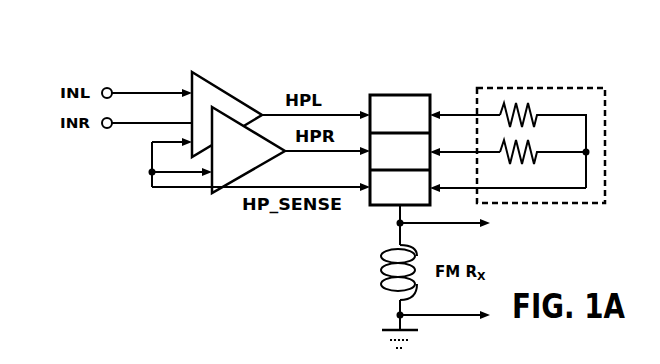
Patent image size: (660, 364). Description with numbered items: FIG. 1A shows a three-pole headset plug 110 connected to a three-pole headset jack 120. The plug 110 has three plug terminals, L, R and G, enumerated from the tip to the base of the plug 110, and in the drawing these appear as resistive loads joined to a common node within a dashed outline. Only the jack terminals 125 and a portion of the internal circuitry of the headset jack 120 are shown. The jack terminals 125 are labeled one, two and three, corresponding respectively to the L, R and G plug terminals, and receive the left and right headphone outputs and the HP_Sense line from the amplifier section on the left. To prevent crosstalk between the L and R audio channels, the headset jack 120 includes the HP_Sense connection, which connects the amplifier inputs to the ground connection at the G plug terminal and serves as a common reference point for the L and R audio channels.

The 3-pole plug 110 is at (578, 81).
The 3-pole headset jack 120 is at (437, 52).
The jack terminals 125 is at (402, 185).